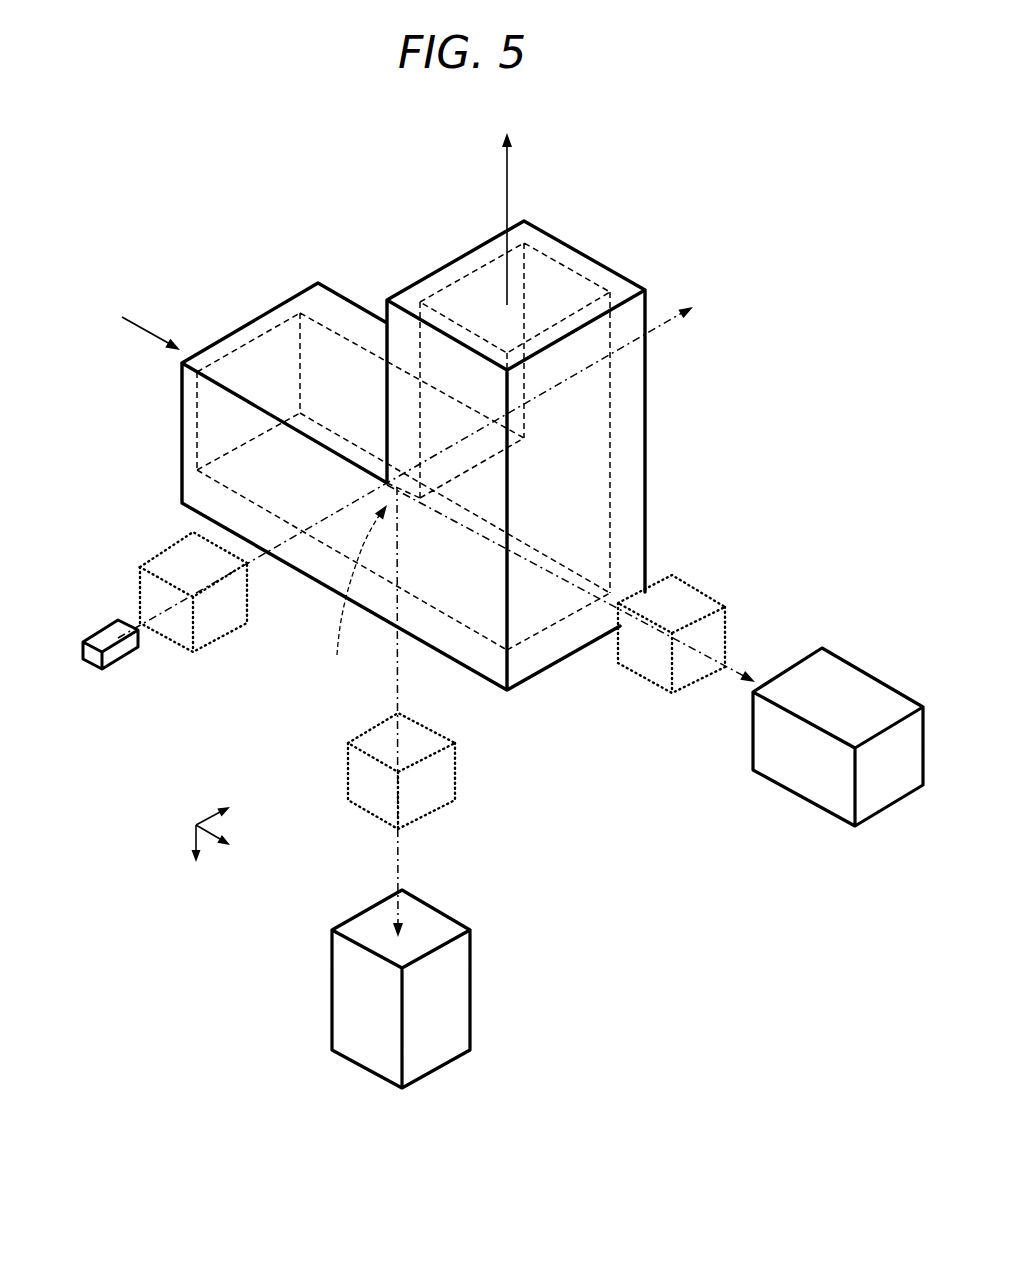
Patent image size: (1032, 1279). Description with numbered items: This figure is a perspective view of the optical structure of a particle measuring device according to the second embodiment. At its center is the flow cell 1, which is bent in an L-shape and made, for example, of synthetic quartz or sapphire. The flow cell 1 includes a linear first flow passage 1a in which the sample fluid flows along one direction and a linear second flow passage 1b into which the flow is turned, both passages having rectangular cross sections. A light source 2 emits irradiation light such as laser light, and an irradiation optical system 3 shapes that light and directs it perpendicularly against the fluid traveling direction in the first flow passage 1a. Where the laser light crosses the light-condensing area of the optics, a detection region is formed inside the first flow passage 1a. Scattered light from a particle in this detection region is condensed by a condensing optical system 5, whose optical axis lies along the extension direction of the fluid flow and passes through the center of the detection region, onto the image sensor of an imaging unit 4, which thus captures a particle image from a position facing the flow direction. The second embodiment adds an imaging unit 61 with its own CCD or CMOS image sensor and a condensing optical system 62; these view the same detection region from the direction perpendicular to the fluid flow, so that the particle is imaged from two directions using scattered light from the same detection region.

The flow cell 1 is at (560, 241).
The first flow passage 1a is at (272, 357).
The second flow passage 1b is at (587, 287).
The light source 2 is at (128, 657).
The irradiation optical system 3 is at (188, 558).
The imaging unit 4 is at (833, 650).
The condensing optical system 5 is at (673, 578).
The imaging unit 61 is at (450, 987).
The condensing optical system 62 is at (438, 786).